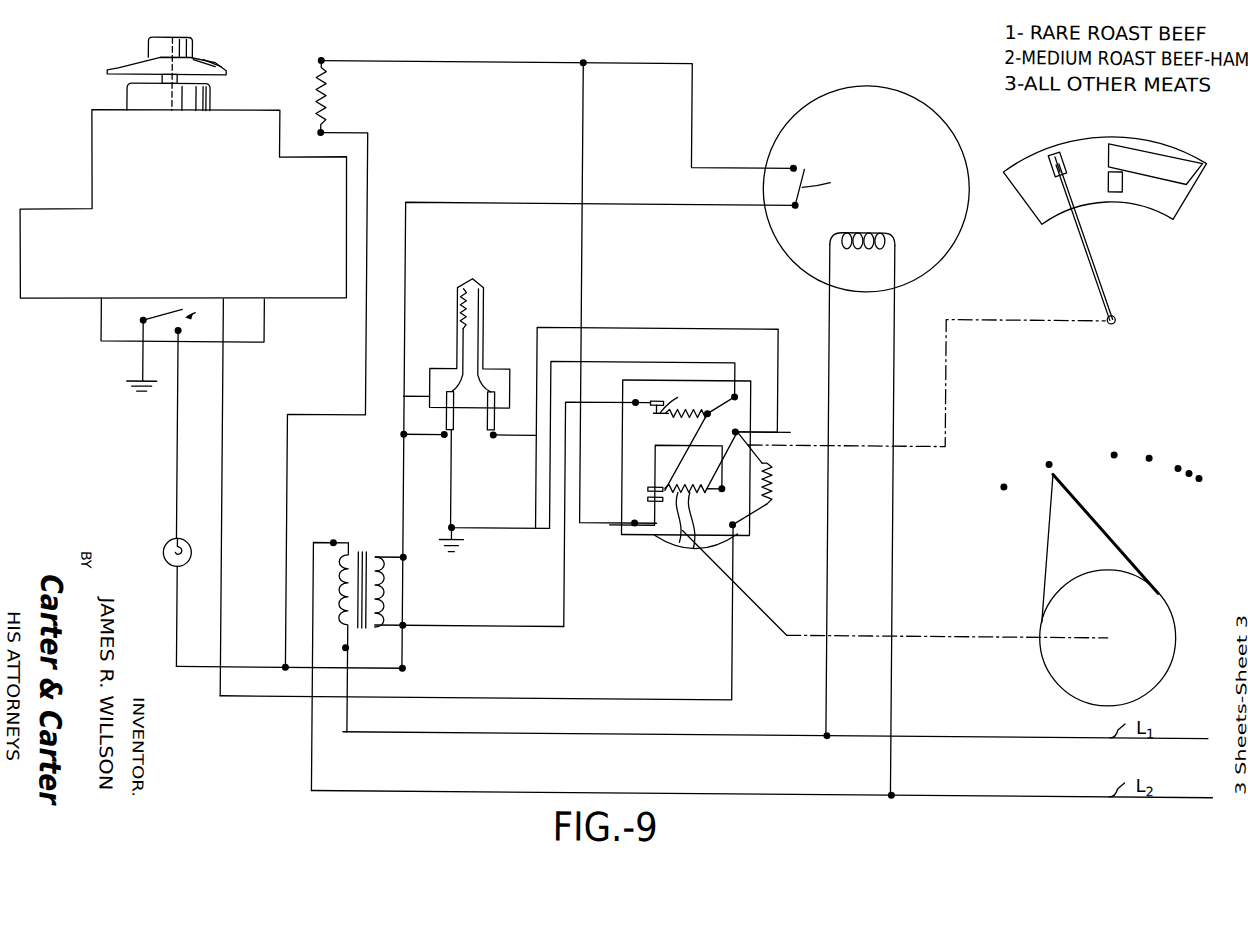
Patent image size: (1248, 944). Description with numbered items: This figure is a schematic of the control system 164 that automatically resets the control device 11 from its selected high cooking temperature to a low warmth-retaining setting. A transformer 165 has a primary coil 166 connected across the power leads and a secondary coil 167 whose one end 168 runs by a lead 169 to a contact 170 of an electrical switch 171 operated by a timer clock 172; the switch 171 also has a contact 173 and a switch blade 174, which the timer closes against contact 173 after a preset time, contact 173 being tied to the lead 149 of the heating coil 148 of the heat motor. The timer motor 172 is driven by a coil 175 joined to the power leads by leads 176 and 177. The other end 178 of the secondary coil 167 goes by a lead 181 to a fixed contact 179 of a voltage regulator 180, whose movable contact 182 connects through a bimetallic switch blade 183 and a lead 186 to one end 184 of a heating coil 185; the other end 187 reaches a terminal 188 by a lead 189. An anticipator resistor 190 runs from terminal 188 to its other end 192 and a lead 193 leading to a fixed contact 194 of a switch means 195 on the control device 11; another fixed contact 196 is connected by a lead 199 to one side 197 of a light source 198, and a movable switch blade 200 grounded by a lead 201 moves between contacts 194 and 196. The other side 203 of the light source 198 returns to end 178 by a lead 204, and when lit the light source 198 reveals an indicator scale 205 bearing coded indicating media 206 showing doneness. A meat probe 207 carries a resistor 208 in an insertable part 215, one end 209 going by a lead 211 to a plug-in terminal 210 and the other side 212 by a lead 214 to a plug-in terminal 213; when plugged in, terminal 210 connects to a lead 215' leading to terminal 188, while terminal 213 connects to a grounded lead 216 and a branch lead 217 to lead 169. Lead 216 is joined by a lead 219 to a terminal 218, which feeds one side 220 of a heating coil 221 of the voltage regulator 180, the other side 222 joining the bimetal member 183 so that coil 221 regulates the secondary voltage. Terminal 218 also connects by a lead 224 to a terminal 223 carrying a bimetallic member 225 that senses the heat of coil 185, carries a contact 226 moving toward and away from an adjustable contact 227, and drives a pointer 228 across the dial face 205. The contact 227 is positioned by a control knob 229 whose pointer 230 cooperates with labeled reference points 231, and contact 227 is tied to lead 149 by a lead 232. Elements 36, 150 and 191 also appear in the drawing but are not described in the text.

The control device 11 is at (244, 122).
The control knob 36 is at (207, 69).
The heating coil 148 is at (325, 104).
The lead 149 is at (367, 63).
The conductor 150 is at (347, 136).
The control system 164 is at (756, 78).
The transformer 165 is at (360, 522).
The primary coil 166 is at (322, 561).
The secondary coil 167 is at (390, 582).
The end of secondary coil 168 is at (406, 557).
The lead 169 is at (401, 377).
The contact 170 is at (796, 207).
The electrical switch 171 is at (814, 161).
The timer clock 172 is at (875, 85).
The contact 173 is at (791, 164).
The switch blade 174 is at (835, 181).
The coil 175 is at (864, 231).
The lead 176 is at (832, 546).
The lead 177 is at (897, 520).
The end of secondary coil 178 is at (420, 624).
The fixed contact 179 is at (655, 402).
The voltage regulator 180 is at (675, 398).
The lead 181 is at (566, 605).
The movable contact 182 is at (650, 410).
The bimetallic switch blade 183 is at (675, 418).
The end of heating coil 184 is at (660, 500).
The heating coil 185 is at (668, 500).
The lead 186 is at (674, 461).
The end of heating coil 187 is at (731, 533).
The terminal 188 is at (740, 431).
The lead 189 is at (778, 468).
The anticipator resistor 190 is at (772, 503).
The mechanical linkage 191 is at (921, 383).
The end of anticipator resistor 192 is at (742, 530).
The lead 193 is at (539, 699).
The fixed contact 194 is at (179, 313).
The switch means 195 is at (195, 316).
The fixed contact 196 is at (180, 340).
The side of light source 197 is at (184, 543).
The light source 198 is at (164, 556).
The lead 199 is at (178, 470).
The movable switch blade 200 is at (140, 320).
The lead 201 is at (140, 364).
The side of light source 203 is at (176, 572).
The lead 204 is at (197, 671).
The indicator scale 205 is at (1044, 188).
The indicating media 206 is at (1058, 150).
The meat probe 207 is at (486, 306).
The resistor 208 is at (458, 300).
The end of resistor 209 is at (472, 281).
The plug-in terminal 210 is at (490, 424).
The lead 211 is at (482, 345).
The side of resistor 212 is at (458, 320).
The plug-in terminal 213 is at (397, 399).
The lead 214 is at (456, 346).
The insertable part 215 is at (513, 264).
The lead 215' is at (644, 406).
The lead 216 is at (453, 498).
The branch lead 217 is at (422, 551).
The terminal 218 is at (740, 400).
The lead 219 is at (590, 359).
The side of heating coil 220 is at (707, 405).
The heating coil 221 is at (685, 400).
The side of heating coil 222 is at (658, 400).
The terminal 223 is at (760, 508).
The lead 224 is at (745, 415).
The bimetallic member 225 is at (690, 545).
The electrical contact 226 is at (652, 480).
The adjustable contact 227 is at (648, 495).
The pointer 228 is at (1089, 248).
The control knob 229 is at (1150, 595).
The pointer 230 is at (1090, 533).
The reference points 231 is at (1147, 458).
The lead 232 is at (593, 132).